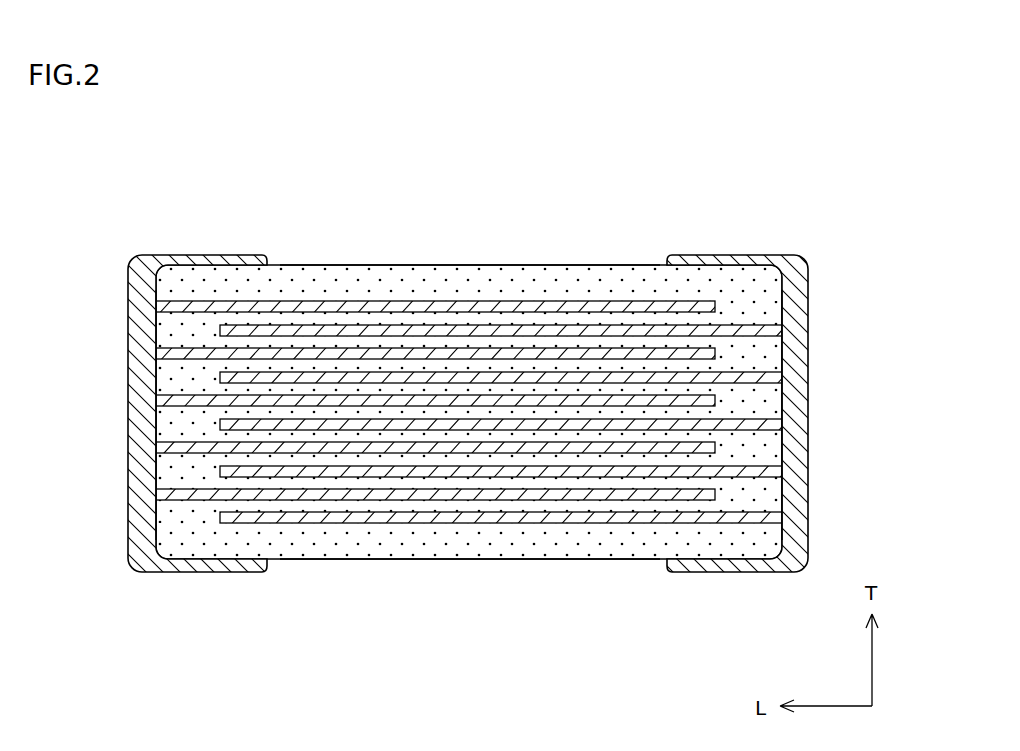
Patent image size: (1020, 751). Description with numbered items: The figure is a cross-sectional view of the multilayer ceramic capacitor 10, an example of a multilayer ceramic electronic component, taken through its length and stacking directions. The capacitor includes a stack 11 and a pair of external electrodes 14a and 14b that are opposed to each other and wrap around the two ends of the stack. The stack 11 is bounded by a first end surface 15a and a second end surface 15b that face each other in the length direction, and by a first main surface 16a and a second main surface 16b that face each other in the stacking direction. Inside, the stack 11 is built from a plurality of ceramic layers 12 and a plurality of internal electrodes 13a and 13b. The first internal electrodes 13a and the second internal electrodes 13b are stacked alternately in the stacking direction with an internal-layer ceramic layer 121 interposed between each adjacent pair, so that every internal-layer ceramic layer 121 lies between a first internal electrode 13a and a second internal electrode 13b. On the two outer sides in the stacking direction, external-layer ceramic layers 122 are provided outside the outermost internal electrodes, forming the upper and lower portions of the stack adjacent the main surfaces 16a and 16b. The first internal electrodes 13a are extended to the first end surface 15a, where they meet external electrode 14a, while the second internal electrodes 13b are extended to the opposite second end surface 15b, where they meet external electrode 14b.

The multilayer ceramic capacitor 10 is at (510, 391).
The stack 11 is at (506, 396).
The ceramic layers 12 is at (469, 398).
The internal-layer ceramic layer 121 is at (515, 348).
The external-layer ceramic layer 122 is at (375, 290).
The first internal electrode 13a is at (590, 345).
The second internal electrode 13b is at (553, 466).
The external electrode 14a is at (128, 389).
The external electrode 14b is at (808, 353).
The first end surface 15a is at (147, 323).
The second end surface 15b is at (783, 308).
The first main surface 16a is at (310, 265).
The second main surface 16b is at (330, 560).